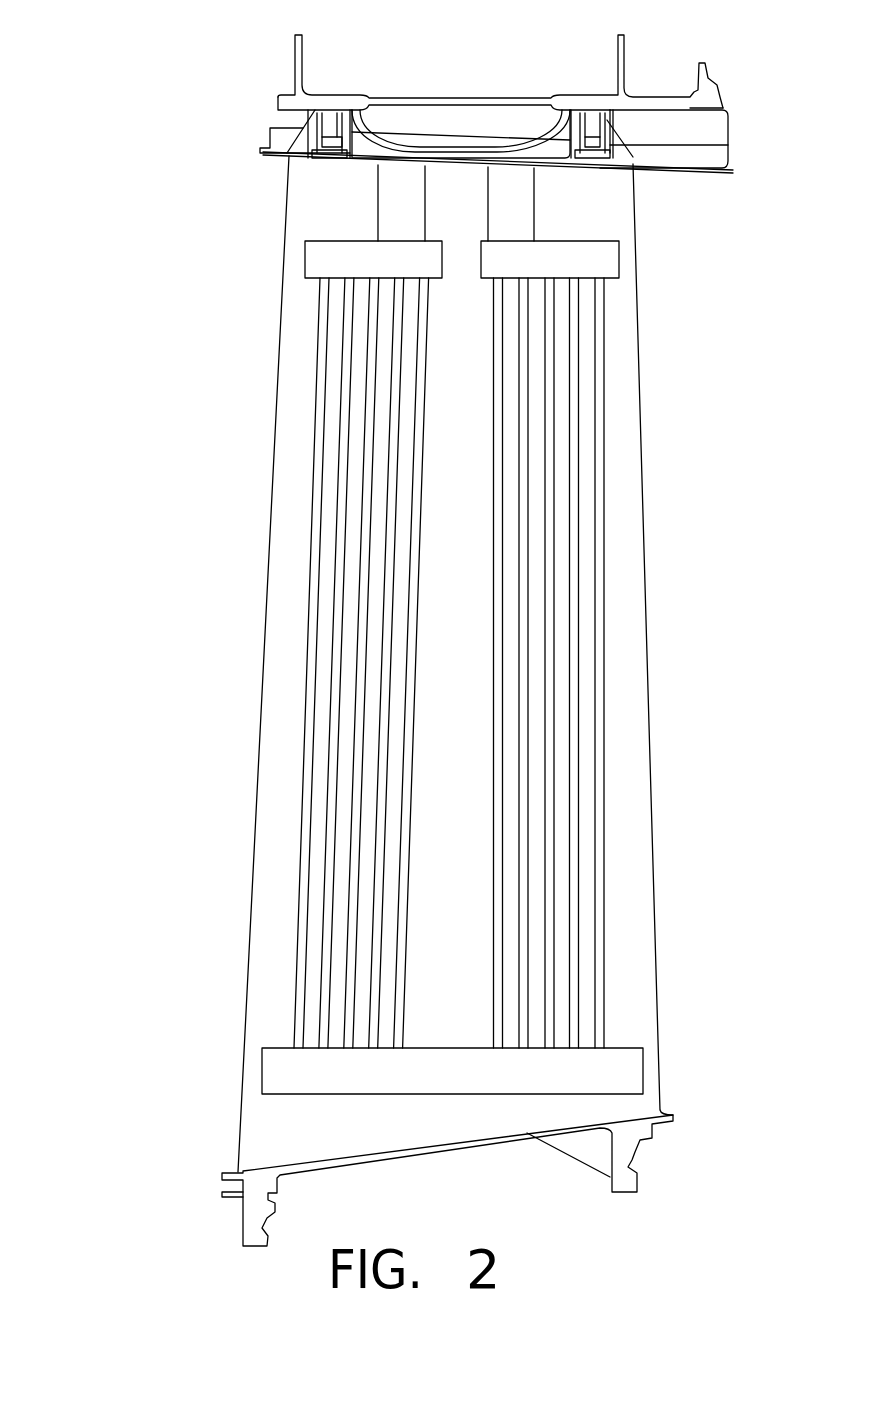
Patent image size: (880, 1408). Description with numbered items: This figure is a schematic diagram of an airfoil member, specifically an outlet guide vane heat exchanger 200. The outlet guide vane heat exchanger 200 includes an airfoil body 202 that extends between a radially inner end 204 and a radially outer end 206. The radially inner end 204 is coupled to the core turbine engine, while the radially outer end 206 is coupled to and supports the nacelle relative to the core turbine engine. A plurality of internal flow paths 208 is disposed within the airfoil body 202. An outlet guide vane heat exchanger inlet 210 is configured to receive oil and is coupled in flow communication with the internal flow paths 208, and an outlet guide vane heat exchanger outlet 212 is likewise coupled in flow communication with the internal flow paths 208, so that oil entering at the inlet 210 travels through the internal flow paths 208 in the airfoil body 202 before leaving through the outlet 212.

The outlet guide vane heat exchanger 200 is at (152, 52).
The airfoil body 202 is at (275, 415).
The radially inner end 204 is at (287, 171).
The radially outer end 206 is at (252, 1207).
The internal flow paths 208 is at (295, 968).
The outlet guide vane heat exchanger inlet 210 is at (403, 198).
The outlet guide vane heat exchanger outlet 212 is at (518, 202).